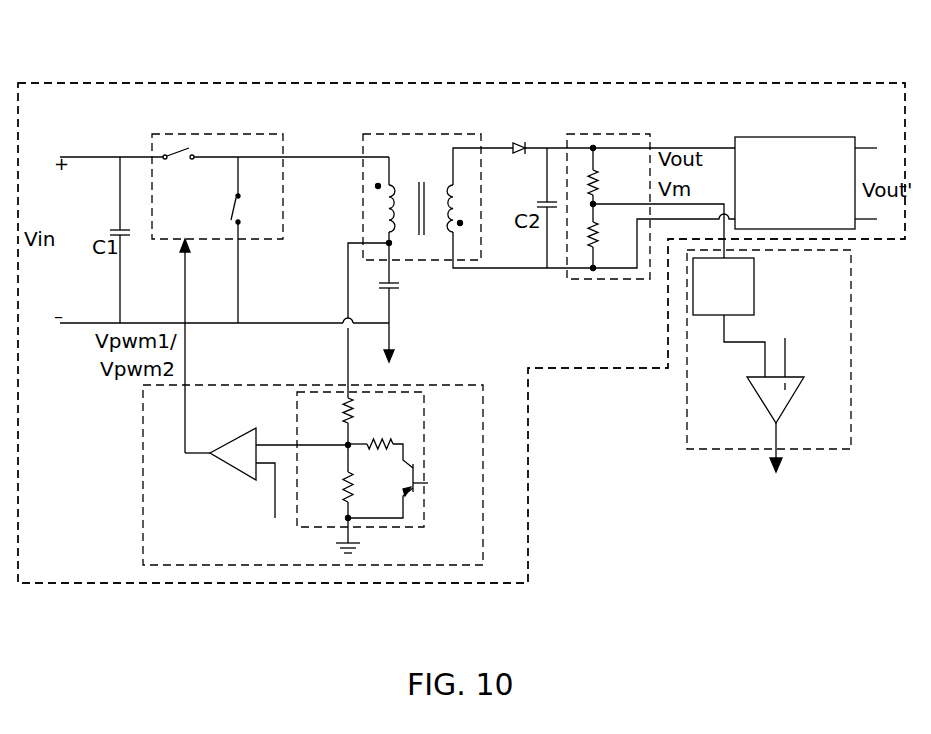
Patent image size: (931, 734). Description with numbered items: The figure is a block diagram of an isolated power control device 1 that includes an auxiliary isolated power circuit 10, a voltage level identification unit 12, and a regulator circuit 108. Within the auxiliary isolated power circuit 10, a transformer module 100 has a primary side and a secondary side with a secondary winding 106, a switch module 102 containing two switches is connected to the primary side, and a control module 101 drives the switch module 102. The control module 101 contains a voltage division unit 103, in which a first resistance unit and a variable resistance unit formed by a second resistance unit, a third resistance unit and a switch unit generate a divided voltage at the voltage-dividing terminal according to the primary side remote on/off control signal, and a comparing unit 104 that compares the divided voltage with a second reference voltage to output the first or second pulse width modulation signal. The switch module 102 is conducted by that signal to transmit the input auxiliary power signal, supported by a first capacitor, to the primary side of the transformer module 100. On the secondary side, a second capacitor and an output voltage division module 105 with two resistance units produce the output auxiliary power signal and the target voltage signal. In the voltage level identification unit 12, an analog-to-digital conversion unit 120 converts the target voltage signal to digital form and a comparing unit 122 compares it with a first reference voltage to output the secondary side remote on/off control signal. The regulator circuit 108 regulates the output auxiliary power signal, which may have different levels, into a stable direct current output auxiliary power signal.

The isolated power control device 1 is at (160, 41).
The auxiliary isolated power circuit 10 is at (743, 82).
The voltage level identification unit 12 is at (687, 398).
The transformer module 100 is at (481, 140).
The control module 101 is at (143, 468).
The switch module 102 is at (257, 241).
The voltage division unit 103 is at (424, 398).
The comparing unit 104 is at (218, 463).
The output voltage division module 105 is at (650, 142).
The secondary winding 106 is at (463, 205).
The regulator circuit 108 is at (800, 136).
The analog-to-digital conversion unit 120 is at (754, 290).
The comparing unit 122 is at (790, 400).